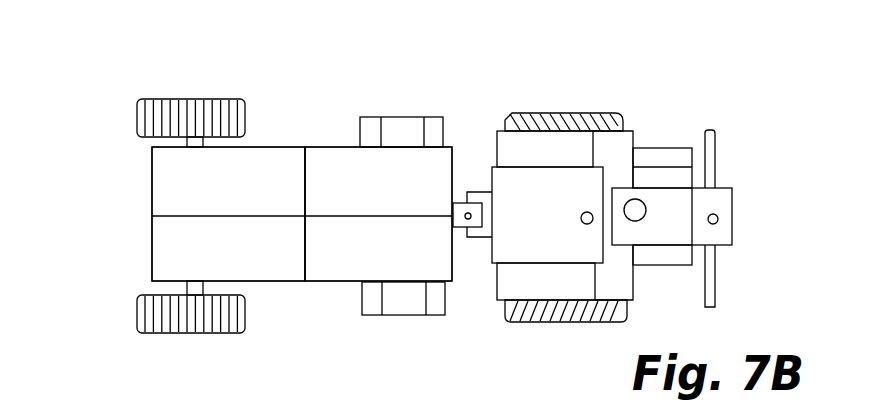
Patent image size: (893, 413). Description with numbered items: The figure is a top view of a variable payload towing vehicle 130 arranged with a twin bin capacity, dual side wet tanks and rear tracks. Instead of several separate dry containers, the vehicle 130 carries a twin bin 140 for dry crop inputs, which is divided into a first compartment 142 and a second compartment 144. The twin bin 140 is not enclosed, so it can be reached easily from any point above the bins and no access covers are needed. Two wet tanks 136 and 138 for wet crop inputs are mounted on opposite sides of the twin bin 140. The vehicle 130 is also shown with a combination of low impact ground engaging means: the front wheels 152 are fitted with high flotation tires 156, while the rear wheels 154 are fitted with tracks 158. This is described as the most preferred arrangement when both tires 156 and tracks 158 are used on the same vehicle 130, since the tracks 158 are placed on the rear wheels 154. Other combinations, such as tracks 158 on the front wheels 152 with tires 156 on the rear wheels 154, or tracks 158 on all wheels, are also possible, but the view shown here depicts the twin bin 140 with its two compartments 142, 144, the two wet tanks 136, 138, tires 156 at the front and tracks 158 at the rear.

The variable payload towing vehicle 130 is at (128, 206).
The wet tank 136 is at (393, 116).
The wet tank 138 is at (408, 315).
The twin bin 140 is at (275, 134).
The first compartment 142 is at (241, 192).
The second compartment 144 is at (431, 195).
The front wheels 152 is at (563, 104).
The rear wheels 154 is at (192, 93).
The high flotation tires 156 is at (583, 113).
The tracks 158 is at (217, 100).